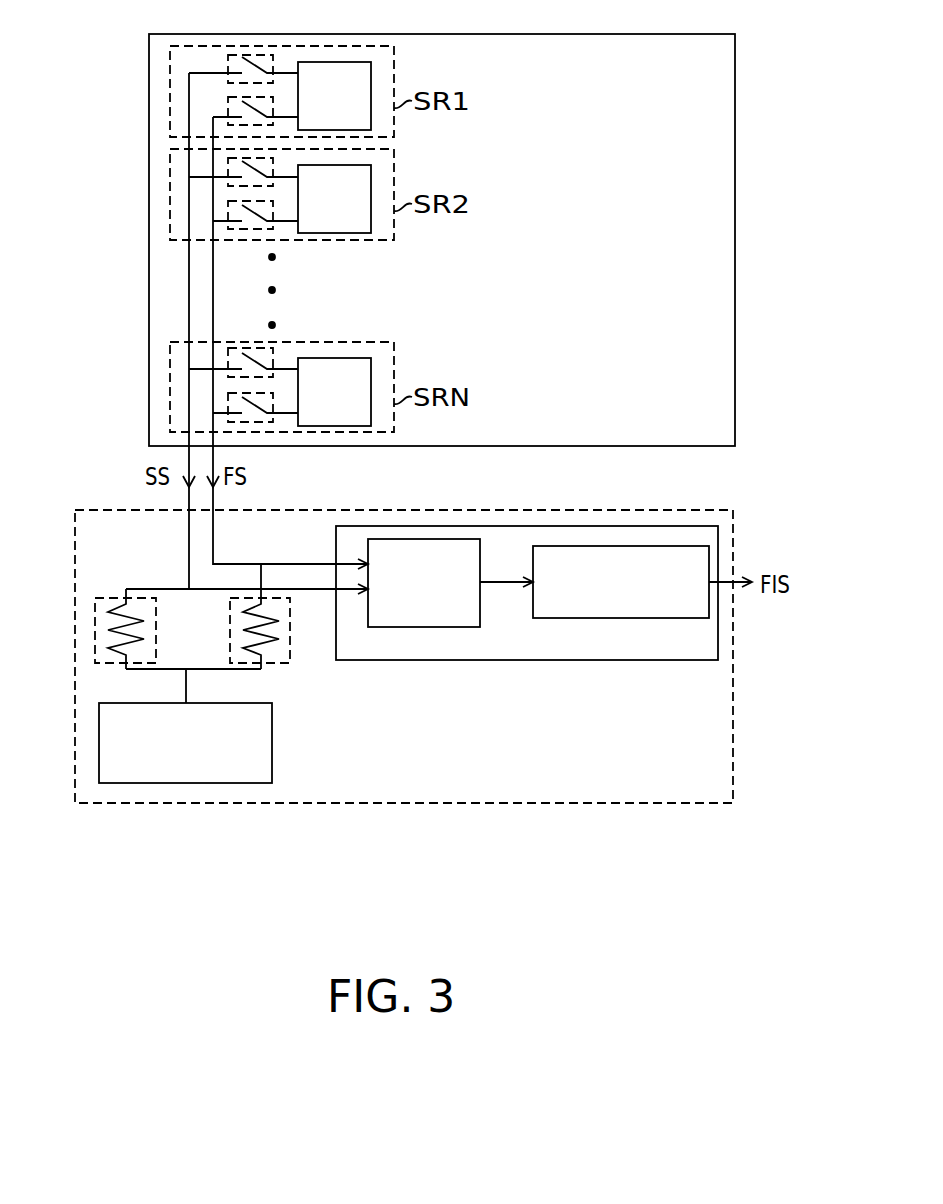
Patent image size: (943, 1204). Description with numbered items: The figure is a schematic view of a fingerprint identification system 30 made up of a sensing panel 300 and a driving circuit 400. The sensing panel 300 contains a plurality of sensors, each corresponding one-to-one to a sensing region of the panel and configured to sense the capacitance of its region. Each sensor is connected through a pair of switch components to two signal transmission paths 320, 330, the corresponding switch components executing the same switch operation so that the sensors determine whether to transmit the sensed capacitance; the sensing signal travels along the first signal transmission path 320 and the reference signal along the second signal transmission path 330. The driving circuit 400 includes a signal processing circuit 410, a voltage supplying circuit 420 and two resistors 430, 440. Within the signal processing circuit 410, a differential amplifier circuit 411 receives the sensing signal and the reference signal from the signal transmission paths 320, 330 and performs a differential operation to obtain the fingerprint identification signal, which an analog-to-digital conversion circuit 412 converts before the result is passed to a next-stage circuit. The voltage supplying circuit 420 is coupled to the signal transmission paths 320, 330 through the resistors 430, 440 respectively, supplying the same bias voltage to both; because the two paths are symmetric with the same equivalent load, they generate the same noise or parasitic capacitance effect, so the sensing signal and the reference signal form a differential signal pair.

The fingerprint identification system 30 is at (772, 876).
The sensing panel 300 is at (735, 300).
The signal transmission path 320 is at (189, 282).
The signal transmission path 330 is at (213, 280).
The driving circuit 400 is at (733, 712).
The signal processing circuit 410 is at (561, 660).
The differential amplifier circuit 411 is at (424, 627).
The analog-to-digital conversion circuit 412 is at (630, 618).
The voltage supplying circuit 420 is at (272, 742).
The resistor 430 is at (96, 640).
The resistor 440 is at (290, 656).